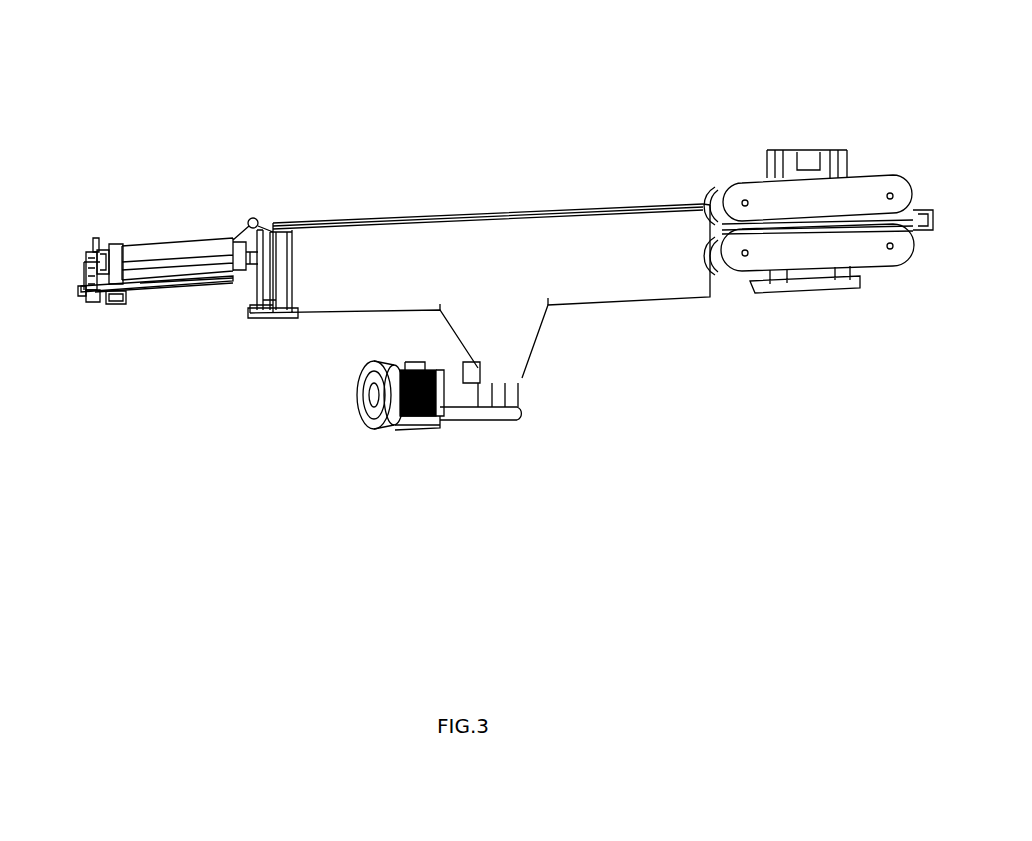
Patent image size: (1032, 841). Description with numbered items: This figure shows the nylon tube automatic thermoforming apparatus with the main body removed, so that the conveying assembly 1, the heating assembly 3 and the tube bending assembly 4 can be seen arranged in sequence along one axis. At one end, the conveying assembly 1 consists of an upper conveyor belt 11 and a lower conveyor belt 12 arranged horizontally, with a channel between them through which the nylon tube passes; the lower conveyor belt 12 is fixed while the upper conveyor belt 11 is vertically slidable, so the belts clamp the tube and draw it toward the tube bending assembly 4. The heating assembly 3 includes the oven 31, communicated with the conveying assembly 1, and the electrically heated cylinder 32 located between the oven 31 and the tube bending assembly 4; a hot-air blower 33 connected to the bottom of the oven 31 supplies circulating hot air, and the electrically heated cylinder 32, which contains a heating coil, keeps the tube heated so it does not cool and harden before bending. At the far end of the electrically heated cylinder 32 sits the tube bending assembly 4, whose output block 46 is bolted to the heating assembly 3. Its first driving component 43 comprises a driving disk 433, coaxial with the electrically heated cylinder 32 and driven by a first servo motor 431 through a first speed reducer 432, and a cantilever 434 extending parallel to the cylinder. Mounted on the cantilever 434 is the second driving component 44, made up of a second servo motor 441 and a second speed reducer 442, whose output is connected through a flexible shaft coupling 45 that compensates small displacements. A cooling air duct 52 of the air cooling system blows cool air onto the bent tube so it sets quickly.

The conveying assembly 1 is at (818, 150).
The upper conveyor belt 11 is at (745, 200).
The lower conveyor belt 12 is at (858, 253).
The heating assembly 3 is at (348, 220).
The oven 31 is at (495, 233).
The electrically heated cylinder 32 is at (168, 242).
The hot-air blower 33 is at (375, 430).
The tube bending assembly 4 is at (96, 236).
The first driving component 43 is at (186, 300).
The first servo motor 431 is at (247, 288).
The first speed reducer 432 is at (255, 217).
The driving disk 433 is at (240, 233).
The cantilever 434 is at (163, 288).
The second driving component 44 is at (101, 306).
The second servo motor 441 is at (112, 300).
The second speed reducer 442 is at (95, 298).
The shaft coupling 45 is at (83, 292).
The output block 46 is at (118, 243).
The cooling air duct 52 is at (90, 267).